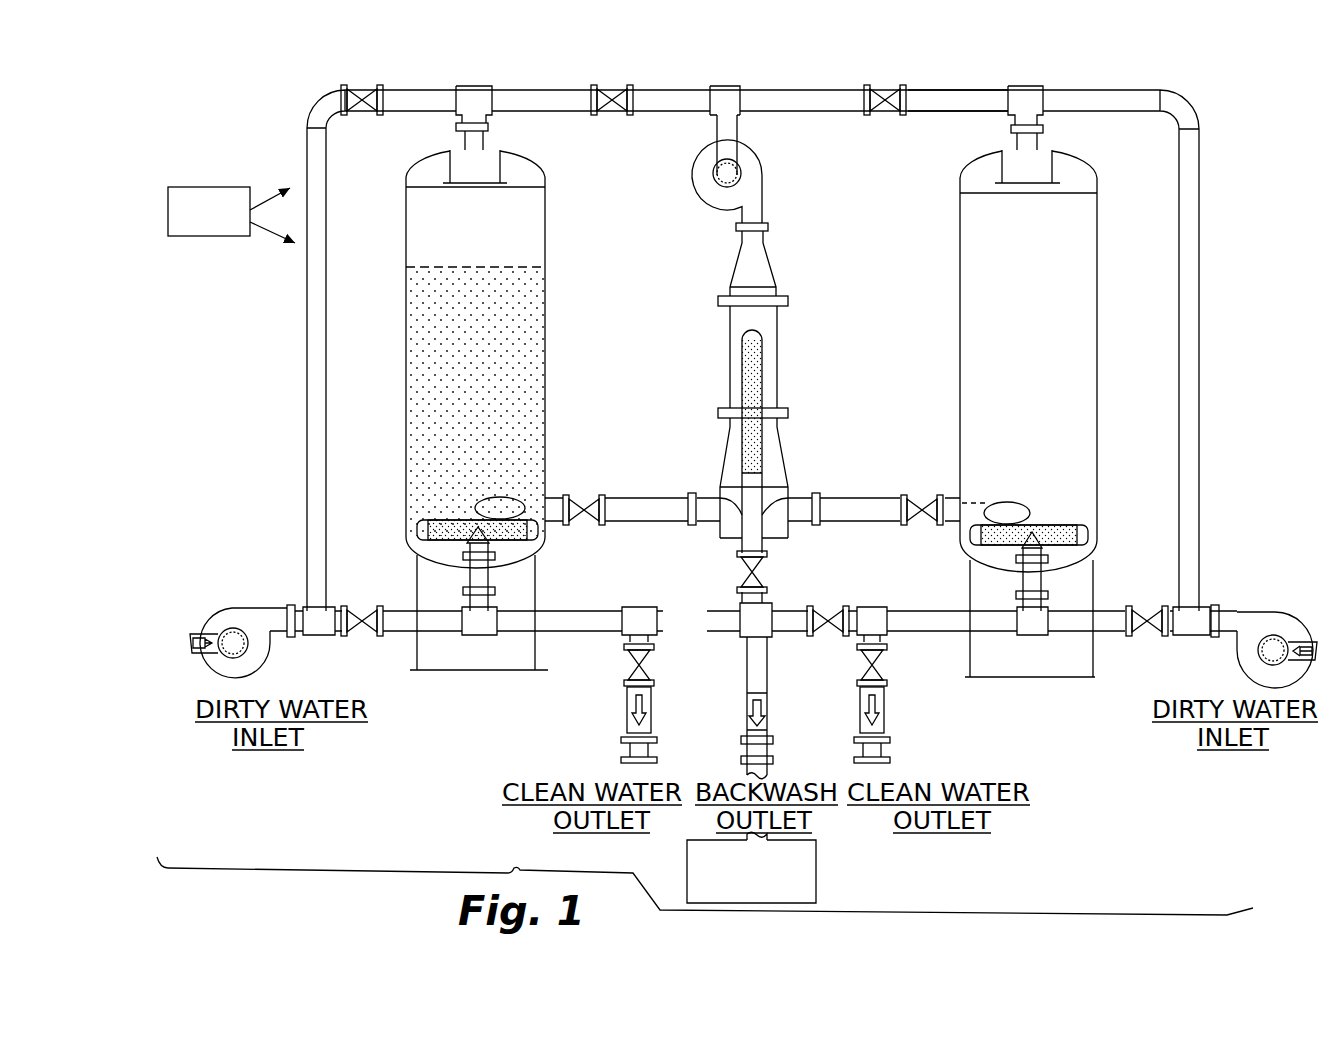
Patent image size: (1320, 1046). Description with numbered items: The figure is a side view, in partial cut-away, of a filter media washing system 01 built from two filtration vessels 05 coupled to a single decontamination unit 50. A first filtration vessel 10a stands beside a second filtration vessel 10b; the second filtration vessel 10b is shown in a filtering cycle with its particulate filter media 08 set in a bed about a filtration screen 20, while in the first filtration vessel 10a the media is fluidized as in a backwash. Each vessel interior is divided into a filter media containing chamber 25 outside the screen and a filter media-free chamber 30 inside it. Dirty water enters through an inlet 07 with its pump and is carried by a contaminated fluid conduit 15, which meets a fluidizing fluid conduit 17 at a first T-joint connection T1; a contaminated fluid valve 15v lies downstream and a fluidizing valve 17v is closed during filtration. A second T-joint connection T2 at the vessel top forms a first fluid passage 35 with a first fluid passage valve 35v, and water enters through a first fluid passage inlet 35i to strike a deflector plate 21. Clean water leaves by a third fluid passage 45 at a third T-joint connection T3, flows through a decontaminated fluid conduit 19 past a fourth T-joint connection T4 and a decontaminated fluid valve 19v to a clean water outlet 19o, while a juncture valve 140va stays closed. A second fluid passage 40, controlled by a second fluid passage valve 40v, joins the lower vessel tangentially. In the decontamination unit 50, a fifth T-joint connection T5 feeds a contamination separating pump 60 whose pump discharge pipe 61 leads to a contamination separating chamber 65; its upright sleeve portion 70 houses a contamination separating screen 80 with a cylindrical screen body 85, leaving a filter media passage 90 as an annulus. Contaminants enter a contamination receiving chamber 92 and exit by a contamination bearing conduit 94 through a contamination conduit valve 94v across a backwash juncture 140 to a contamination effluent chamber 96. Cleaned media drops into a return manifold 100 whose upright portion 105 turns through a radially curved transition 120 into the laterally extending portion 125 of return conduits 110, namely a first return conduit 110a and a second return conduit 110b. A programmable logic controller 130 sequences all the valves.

The filter media washing system 01 is at (818, 64).
The filtration vessel 05 is at (655, 396).
The inlet 07 is at (1290, 612).
The particulate filter media 08 is at (425, 374).
The first filtration vessel 10a is at (1085, 259).
The second filtration vessel 10b is at (534, 247).
The contaminated fluid conduit 15 is at (1198, 370).
The contaminated fluid valve 15v is at (367, 109).
The fluidizing fluid conduit 17 is at (1095, 630).
The fluidizing valve 17v is at (366, 632).
The decontaminated fluid conduit 19 is at (888, 637).
The decontaminated fluid valve 19v is at (863, 664).
The clean water outlet 19o is at (892, 760).
The filtration screen 20 is at (1068, 522).
The deflector plate 21 is at (1027, 195).
The filter media containing chamber 25 is at (1036, 386).
The filter media-free chamber 30 is at (1072, 541).
The first fluid passage 35 is at (908, 92).
The first fluid passage inlet 35i is at (1009, 130).
The first fluid passage valve 35v is at (613, 110).
The second fluid passage 40 is at (752, 510).
The second fluid passage valve 40v is at (583, 498).
The third fluid passage 45 is at (955, 612).
The decontamination unit 50 is at (743, 368).
The contamination separating pump 60 is at (763, 183).
The pump discharge pipe 61 is at (735, 215).
The contamination separating chamber 65 is at (777, 354).
The upright sleeve portion 70 is at (722, 380).
The contamination separating screen 80 is at (755, 384).
The cylindrical screen body 85 is at (762, 366).
The filter media passage 90 is at (738, 386).
The contamination receiving chamber 92 is at (760, 450).
The contamination bearing conduit 94 is at (768, 492).
The contamination conduit valve 94v is at (740, 576).
The contamination effluent chamber 96 is at (769, 880).
The return manifold 100 is at (743, 483).
The upright portion 105 is at (722, 462).
The return conduit 110 is at (847, 583).
The first return conduit 110a is at (780, 538).
The second return conduit 110b is at (690, 528).
The radially curved transition 120 is at (724, 546).
The laterally extending portion 125 is at (826, 498).
The programmable logic controller 130 is at (235, 237).
The backwash juncture 140 is at (745, 637).
The juncture valve 140va is at (806, 636).
The first T-joint connection T1 is at (1200, 611).
The second T-joint connection T2 is at (1021, 90).
The third T-joint connection T3 is at (1030, 636).
The fourth T-joint connection T4 is at (889, 610).
The fifth T-joint connection T5 is at (728, 90).